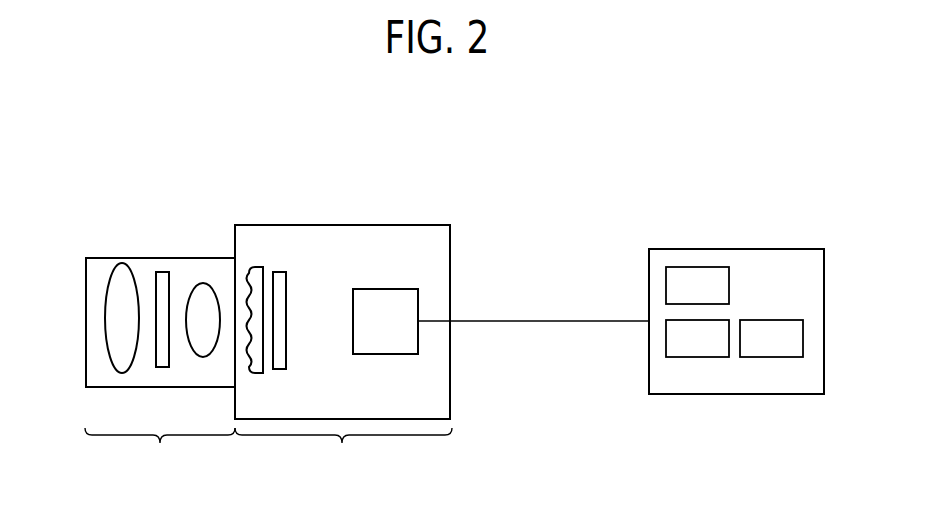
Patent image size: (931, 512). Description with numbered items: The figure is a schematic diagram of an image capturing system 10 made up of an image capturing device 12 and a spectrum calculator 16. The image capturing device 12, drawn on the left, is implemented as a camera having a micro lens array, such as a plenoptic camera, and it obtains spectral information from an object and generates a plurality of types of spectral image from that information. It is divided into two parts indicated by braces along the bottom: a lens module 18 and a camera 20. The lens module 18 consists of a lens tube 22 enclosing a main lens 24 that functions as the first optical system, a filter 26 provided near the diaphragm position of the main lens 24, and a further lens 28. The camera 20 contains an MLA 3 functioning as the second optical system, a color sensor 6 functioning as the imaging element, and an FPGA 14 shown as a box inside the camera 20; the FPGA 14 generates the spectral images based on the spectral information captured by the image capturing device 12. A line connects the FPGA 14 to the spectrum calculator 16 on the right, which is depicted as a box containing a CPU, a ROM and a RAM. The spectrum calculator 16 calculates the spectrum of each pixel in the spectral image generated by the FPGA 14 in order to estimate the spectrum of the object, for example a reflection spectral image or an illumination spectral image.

The image capturing system 10 is at (433, 152).
The image capturing device 12 is at (258, 196).
The field-programmable gate array (FPGA) 14 is at (392, 289).
The spectrum calculator 16 is at (768, 249).
The lens module 18 is at (160, 450).
The camera 20 is at (343, 450).
The lens tube 22 is at (121, 263).
The main lens 24 is at (110, 286).
The filter 26 is at (161, 272).
The lens 28 is at (203, 283).
The MLA 3 is at (256, 267).
The color sensor 6 is at (280, 272).